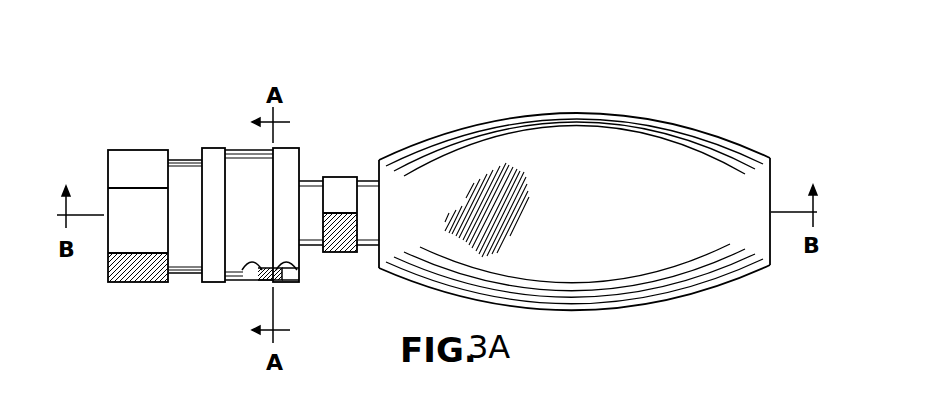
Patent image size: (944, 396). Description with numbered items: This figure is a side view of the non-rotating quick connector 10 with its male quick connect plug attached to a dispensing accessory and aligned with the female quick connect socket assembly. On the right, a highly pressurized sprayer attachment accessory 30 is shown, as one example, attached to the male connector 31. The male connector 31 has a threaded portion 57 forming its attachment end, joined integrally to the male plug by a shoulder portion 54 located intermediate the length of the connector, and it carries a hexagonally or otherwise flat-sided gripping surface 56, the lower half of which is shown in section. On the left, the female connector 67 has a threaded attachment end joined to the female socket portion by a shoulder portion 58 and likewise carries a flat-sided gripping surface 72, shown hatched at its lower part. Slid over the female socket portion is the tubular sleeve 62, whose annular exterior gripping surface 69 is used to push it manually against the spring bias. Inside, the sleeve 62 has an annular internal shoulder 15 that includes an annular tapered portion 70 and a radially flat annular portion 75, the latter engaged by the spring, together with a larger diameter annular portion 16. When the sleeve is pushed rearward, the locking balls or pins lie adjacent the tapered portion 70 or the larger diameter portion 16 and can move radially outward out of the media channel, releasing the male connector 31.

The non-rotating quick connector 10 is at (361, 101).
The annular internal shoulder 15 is at (278, 281).
The larger diameter annular portion 16 is at (290, 283).
The highly pressurized sprayer attachment accessory 30 is at (678, 162).
The male connector 31 is at (357, 171).
The shoulder portion 54 is at (310, 187).
The gripping surface 56 is at (340, 240).
The threaded portion 57 is at (368, 223).
The shoulder portion 58 is at (192, 252).
The tubular sleeve 62 is at (247, 163).
The female connector 67 is at (123, 148).
The annular exterior gripping surface 69 is at (287, 155).
The annular tapered portion 70 is at (288, 265).
The gripping surface 72 is at (128, 262).
The radially flat annular portion 75 is at (253, 268).